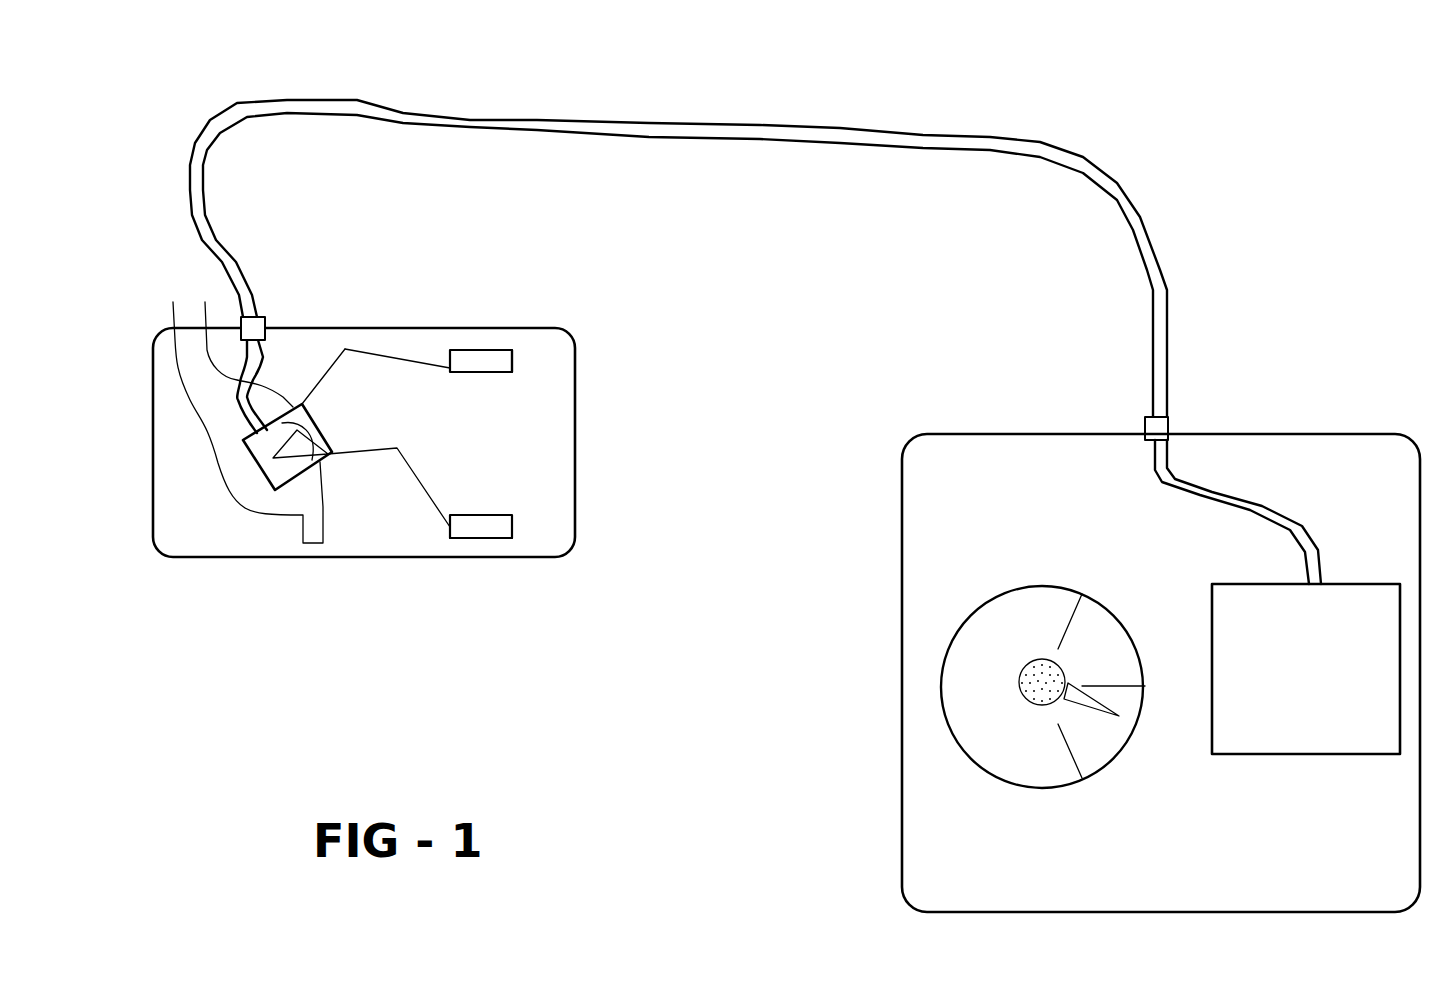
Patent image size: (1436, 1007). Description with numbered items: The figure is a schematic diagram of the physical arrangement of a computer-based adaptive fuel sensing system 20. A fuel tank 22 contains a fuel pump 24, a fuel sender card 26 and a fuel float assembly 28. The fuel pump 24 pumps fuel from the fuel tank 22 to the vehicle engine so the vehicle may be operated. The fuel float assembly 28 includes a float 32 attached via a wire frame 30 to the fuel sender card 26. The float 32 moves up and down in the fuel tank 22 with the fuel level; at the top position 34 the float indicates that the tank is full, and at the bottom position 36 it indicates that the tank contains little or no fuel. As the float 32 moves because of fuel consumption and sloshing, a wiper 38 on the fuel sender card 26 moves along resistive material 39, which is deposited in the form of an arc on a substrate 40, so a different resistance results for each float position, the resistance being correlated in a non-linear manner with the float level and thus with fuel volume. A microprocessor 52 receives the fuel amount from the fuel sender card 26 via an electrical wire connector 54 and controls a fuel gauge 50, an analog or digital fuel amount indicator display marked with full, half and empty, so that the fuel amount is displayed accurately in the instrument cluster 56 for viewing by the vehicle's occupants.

The adaptive fuel sensing system 20 is at (1216, 245).
The fuel tank 22 is at (277, 557).
The fuel pump 24 is at (215, 472).
The fuel sender card 26 is at (328, 466).
The fuel float assembly 28 is at (404, 350).
The wire frame 30 is at (355, 348).
The float 32 is at (493, 352).
The top position 34 is at (503, 367).
The bottom position 36 is at (510, 538).
The wiper 38 is at (268, 445).
The resistive material 39 is at (317, 422).
The substrate 40 is at (330, 437).
The fuel gauge 50 is at (1012, 772).
The microprocessor 52 is at (1220, 756).
The electrical wire connector 54 is at (923, 148).
The instrument cluster 56 is at (903, 841).